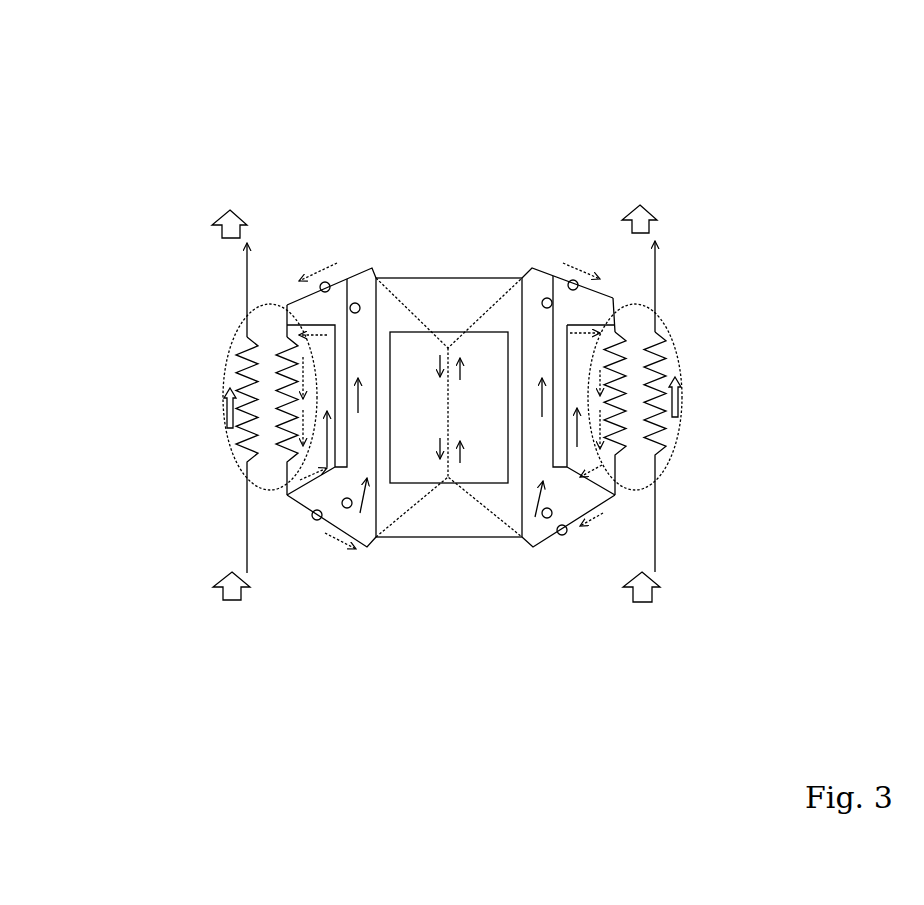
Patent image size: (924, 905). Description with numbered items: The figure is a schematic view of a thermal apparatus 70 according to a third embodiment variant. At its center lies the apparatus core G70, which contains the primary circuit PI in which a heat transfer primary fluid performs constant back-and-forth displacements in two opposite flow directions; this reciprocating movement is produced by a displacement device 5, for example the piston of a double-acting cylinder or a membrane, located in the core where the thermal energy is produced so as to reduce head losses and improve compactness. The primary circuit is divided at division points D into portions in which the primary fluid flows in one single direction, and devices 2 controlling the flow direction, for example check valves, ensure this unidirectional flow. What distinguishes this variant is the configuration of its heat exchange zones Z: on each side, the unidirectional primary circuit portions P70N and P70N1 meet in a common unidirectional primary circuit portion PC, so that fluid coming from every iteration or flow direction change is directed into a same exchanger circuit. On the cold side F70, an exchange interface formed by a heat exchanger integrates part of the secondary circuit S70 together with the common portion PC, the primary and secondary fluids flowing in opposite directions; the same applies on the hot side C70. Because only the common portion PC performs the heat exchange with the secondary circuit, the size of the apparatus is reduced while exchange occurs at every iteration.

The thermal apparatus 70 is at (760, 100).
The displacement device 5 is at (449, 480).
The device controlling the flow direction of the primary fluid 2 is at (353, 303).
The division point D is at (357, 302).
The cold side F70 is at (110, 191).
The hot side C70 is at (821, 191).
The apparatus core G70 is at (397, 278).
The primary circuit PI is at (437, 335).
The unidirectional primary circuit portion P70N is at (585, 627).
The unidirectional primary circuit portion P70N1 is at (289, 497).
The common unidirectional primary circuit portion PC is at (288, 485).
The secondary circuit S70 is at (713, 512).
The heat exchange zone Z is at (735, 325).